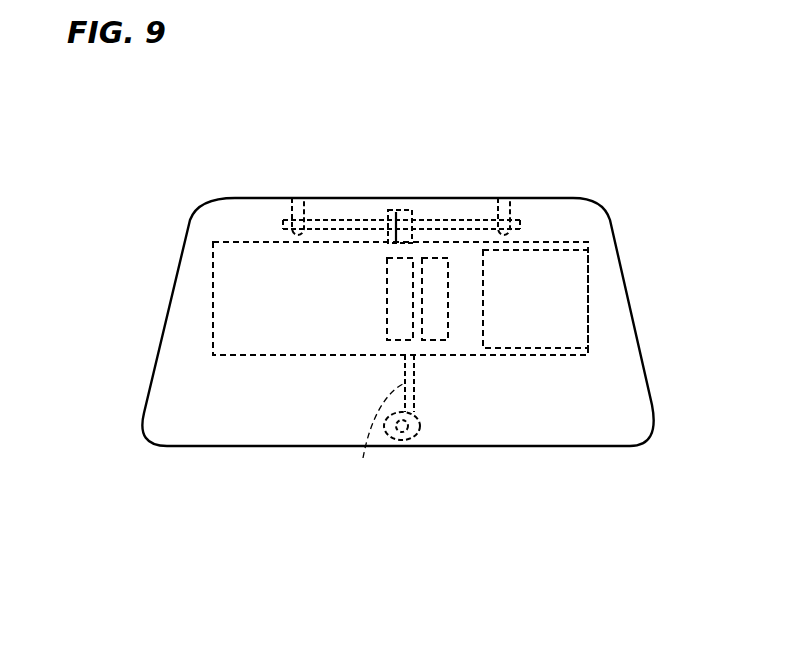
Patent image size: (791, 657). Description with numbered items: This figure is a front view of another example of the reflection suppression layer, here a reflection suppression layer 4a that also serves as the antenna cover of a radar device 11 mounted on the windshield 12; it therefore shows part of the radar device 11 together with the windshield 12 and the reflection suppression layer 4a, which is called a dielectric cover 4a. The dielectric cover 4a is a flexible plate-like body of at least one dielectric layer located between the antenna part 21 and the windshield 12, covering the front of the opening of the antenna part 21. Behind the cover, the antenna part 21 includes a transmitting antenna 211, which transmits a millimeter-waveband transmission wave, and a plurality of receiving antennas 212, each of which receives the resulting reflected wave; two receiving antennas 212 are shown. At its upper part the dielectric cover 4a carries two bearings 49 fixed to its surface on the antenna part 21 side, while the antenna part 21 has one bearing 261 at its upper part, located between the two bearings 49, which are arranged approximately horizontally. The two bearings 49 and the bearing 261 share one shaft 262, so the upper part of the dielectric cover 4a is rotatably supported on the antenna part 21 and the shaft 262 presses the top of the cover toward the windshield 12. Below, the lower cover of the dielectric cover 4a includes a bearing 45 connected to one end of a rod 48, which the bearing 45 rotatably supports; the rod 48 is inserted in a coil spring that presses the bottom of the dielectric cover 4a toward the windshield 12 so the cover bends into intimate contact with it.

The reflection suppression layer (dielectric cover) 4a is at (572, 217).
The windshield 12 is at (370, 128).
The radar device 11 is at (502, 444).
The antenna part 21 is at (487, 410).
The transmitting antenna 211 is at (543, 328).
The receiving antenna 212 is at (438, 328).
The bearing 49 is at (278, 200).
The shaft 262 is at (466, 212).
The bearing 261 is at (401, 210).
The bearing 45 is at (400, 441).
The rod 48 is at (376, 438).